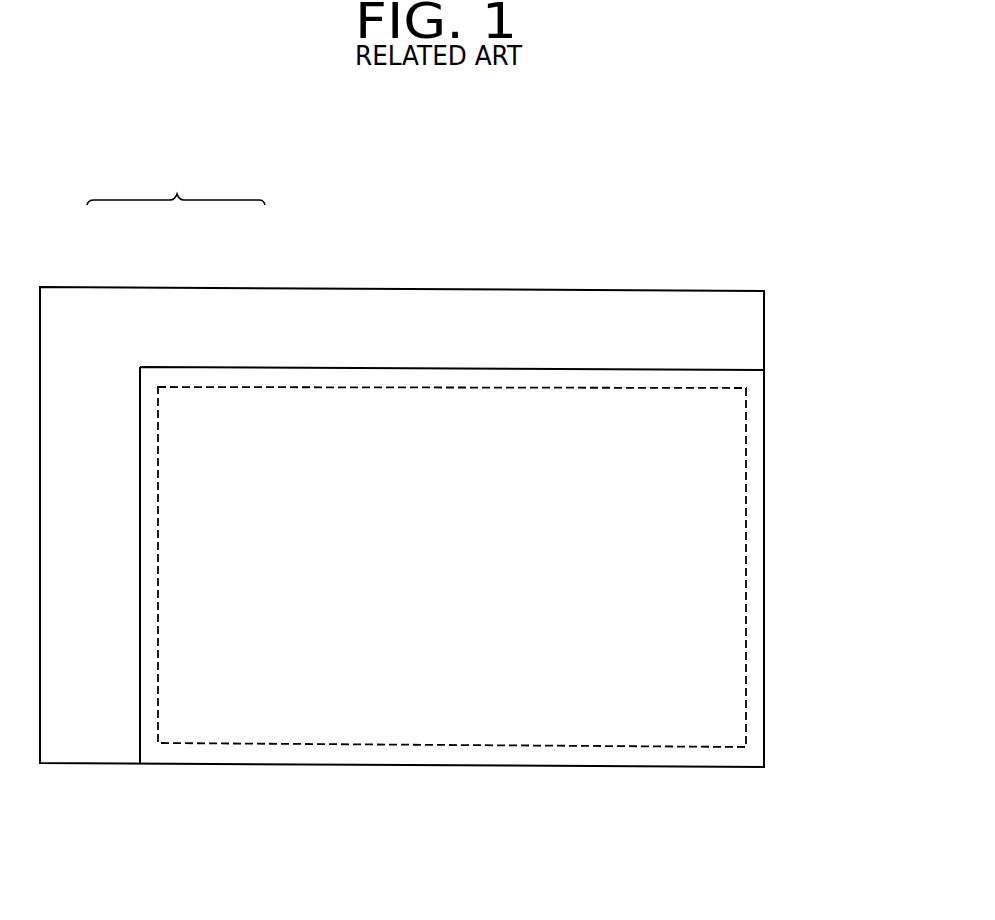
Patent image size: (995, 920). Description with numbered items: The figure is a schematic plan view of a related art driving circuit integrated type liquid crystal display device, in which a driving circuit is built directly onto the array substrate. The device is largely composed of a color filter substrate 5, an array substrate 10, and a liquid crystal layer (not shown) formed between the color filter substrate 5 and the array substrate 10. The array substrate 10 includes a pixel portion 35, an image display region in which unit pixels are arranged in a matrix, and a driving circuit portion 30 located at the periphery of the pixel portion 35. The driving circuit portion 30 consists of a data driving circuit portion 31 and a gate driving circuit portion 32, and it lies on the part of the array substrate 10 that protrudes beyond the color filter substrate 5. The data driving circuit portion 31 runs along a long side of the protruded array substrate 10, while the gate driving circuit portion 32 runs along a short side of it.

The color filter substrate 5 is at (757, 532).
The array substrate 10 is at (757, 317).
The driving circuit portion 30 is at (176, 184).
The data driving circuit portion 31 is at (254, 300).
The gate driving circuit portion 32 is at (98, 447).
The pixel portion 35 is at (435, 544).